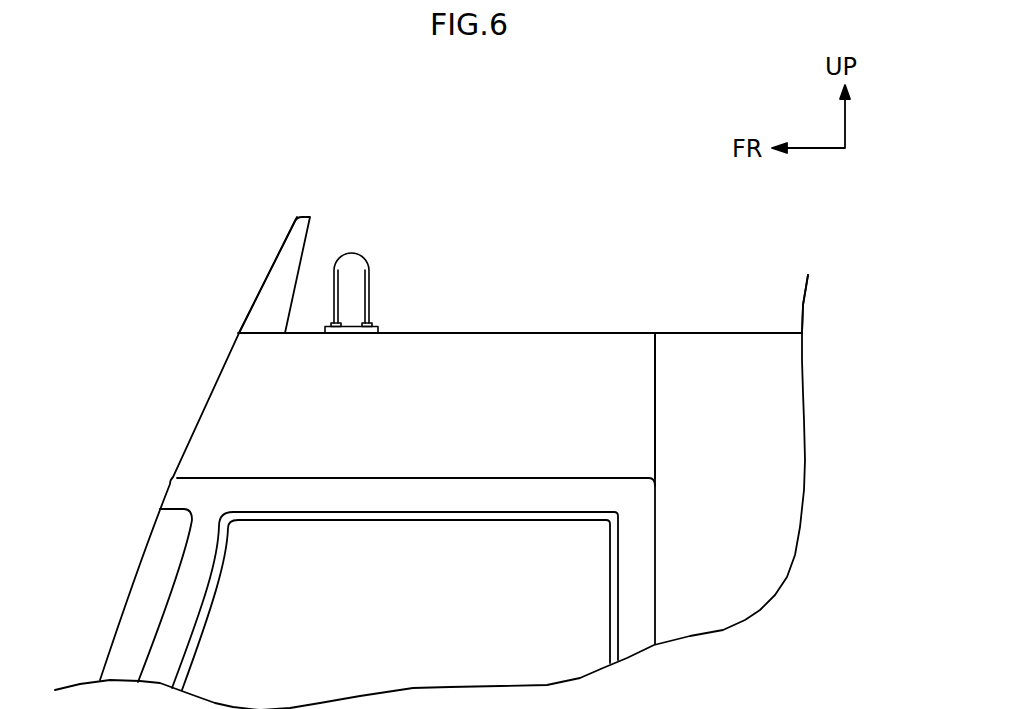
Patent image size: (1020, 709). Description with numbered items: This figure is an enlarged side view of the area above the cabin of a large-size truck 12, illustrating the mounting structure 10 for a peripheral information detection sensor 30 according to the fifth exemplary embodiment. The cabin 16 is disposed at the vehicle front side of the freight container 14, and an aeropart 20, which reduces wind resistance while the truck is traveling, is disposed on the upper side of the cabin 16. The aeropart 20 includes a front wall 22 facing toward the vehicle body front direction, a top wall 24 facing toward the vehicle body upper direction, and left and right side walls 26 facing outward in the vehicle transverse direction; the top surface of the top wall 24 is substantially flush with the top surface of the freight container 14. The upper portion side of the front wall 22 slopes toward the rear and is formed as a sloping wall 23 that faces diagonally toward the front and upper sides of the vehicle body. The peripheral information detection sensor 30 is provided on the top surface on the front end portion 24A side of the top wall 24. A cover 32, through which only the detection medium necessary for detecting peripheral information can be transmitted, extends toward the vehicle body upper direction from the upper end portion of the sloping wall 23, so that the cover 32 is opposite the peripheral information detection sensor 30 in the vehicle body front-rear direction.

The mounting structure 10 is at (227, 287).
The large-size truck 12 is at (672, 310).
The freight container 14 is at (780, 382).
The cabin 16 is at (137, 572).
The aeropart 20 is at (473, 332).
The front wall 22 is at (197, 418).
The sloping wall 23 is at (198, 448).
The top wall 24 is at (425, 333).
The front end portion 24A is at (304, 333).
The side wall 26 is at (555, 348).
The peripheral information detection sensor 30 is at (357, 254).
The cover 32 is at (277, 256).